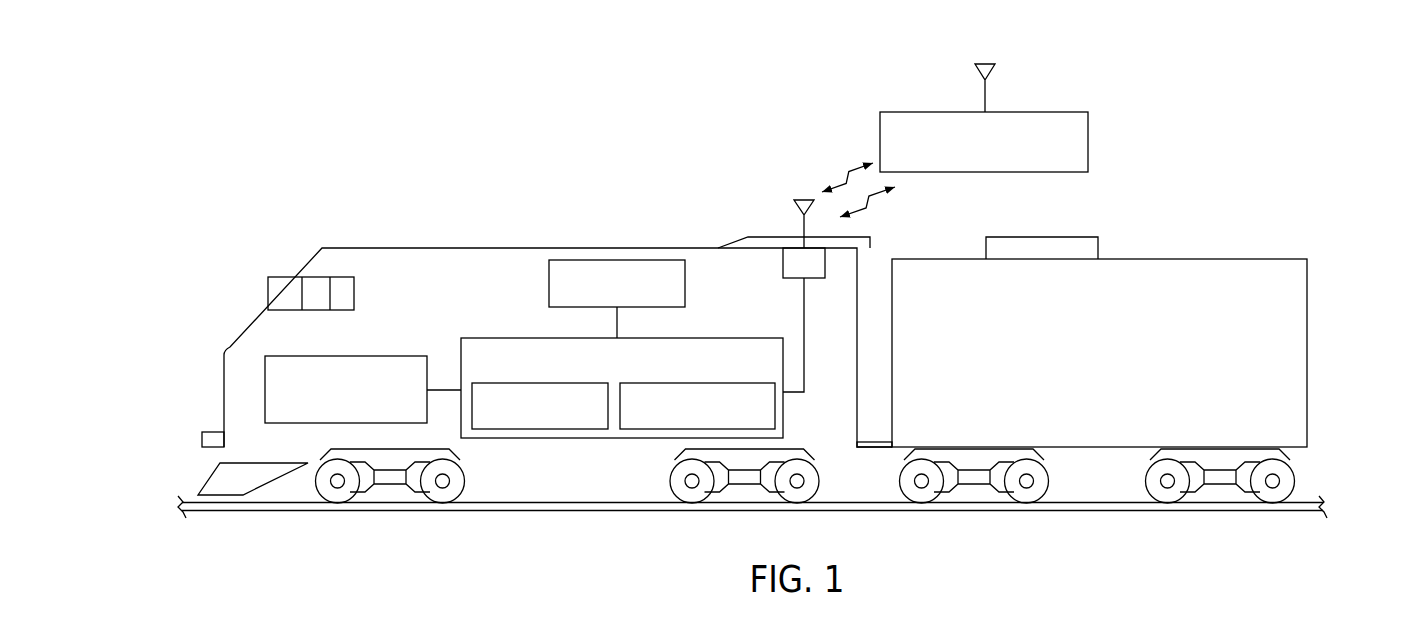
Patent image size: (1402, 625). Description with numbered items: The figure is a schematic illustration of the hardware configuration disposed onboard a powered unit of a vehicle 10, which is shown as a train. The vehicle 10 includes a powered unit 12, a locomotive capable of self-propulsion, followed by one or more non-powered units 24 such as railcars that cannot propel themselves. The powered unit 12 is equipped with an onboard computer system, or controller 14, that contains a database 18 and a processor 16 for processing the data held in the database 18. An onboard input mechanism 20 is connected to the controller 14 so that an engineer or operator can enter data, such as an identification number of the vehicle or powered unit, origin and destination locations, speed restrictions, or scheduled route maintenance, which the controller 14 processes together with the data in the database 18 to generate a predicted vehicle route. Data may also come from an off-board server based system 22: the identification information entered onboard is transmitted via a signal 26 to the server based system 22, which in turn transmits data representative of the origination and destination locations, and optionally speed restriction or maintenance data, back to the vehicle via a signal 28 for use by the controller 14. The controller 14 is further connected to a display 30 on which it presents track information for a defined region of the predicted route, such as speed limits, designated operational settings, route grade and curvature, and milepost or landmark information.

The vehicle 10 is at (365, 127).
The powered unit 12 is at (465, 248).
The onboard computer system (controller) 14 is at (649, 383).
The processor 16 is at (775, 411).
The database 18 is at (540, 429).
The input mechanism 20 is at (402, 356).
The off-board server based system 22 is at (1122, 111).
The non-powered units 24 is at (1234, 259).
The signal 26 is at (848, 170).
The signal 28 is at (880, 197).
The display 30 is at (617, 260).